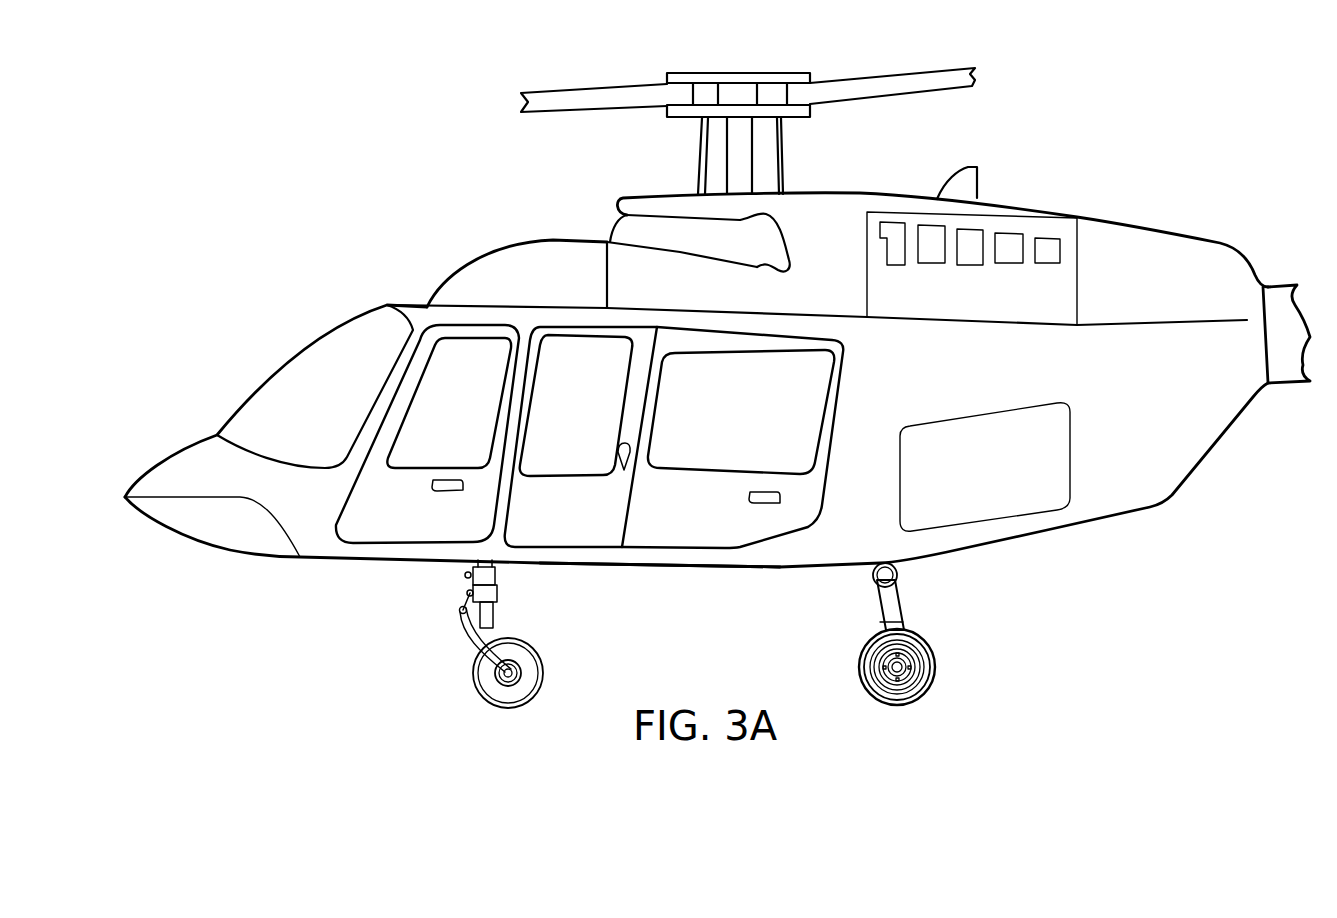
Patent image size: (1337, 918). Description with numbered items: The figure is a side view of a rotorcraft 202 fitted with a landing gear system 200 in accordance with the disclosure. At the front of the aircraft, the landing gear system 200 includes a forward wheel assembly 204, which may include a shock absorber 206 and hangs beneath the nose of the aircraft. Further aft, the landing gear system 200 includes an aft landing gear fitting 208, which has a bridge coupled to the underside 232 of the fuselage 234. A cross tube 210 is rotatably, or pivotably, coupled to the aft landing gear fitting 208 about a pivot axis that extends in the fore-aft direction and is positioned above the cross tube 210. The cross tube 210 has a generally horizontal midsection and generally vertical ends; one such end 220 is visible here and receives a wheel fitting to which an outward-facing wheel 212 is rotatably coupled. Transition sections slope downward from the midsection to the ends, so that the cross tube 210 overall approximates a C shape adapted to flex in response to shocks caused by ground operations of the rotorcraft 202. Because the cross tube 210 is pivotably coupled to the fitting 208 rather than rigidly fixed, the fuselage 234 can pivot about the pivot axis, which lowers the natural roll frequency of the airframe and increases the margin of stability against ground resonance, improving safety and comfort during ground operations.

The landing gear system 200 is at (428, 660).
The rotorcraft 202 is at (1133, 95).
The forward wheel assembly 204 is at (460, 630).
The shock absorber 206 is at (495, 612).
The aft landing gear fitting 208 is at (898, 575).
The cross tube 210 is at (878, 592).
The wheel 212 is at (905, 704).
The end of cross tube 220 is at (880, 622).
The underside of fuselage 232 is at (663, 567).
The fuselage 234 is at (1163, 445).